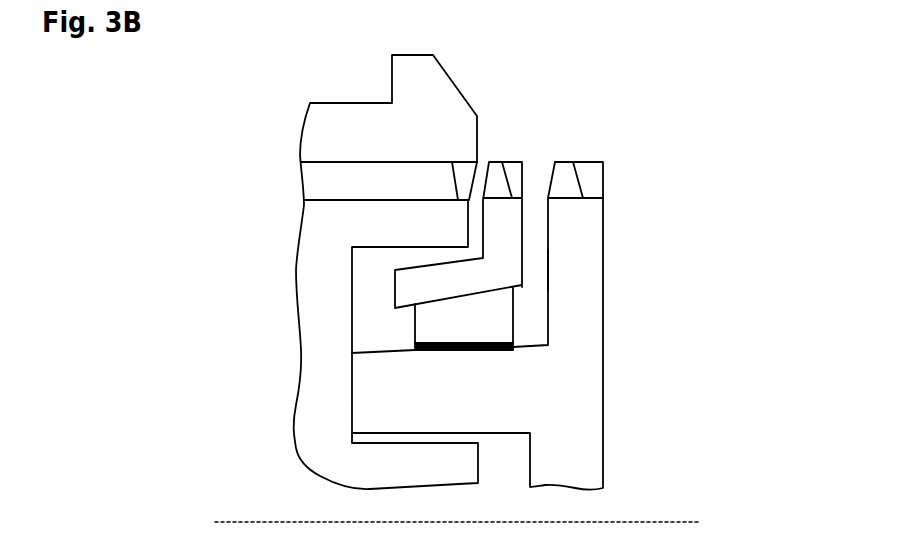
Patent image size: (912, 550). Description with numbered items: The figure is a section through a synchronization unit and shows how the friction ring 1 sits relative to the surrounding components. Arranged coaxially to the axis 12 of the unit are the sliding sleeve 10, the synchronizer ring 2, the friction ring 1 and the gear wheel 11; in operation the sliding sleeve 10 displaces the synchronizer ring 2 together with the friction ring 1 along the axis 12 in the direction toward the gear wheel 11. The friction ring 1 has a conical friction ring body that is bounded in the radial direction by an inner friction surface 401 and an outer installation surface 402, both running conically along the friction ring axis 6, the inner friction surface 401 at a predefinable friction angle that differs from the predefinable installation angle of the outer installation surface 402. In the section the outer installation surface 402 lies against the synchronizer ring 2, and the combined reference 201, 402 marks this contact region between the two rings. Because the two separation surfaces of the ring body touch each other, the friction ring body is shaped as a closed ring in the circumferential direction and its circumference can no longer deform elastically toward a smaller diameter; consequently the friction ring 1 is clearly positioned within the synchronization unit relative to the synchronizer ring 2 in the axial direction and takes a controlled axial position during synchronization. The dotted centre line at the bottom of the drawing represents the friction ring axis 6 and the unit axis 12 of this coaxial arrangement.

The friction ring 1 is at (574, 278).
The synchronizer ring 2 is at (505, 208).
The sliding sleeve 10 is at (333, 183).
The gear wheel 11 is at (587, 282).
The contact surface 201 is at (356, 325).
The outer installation surface 402 is at (578, 254).
The inner friction surface 401 is at (482, 352).
The friction ring axis 6 is at (496, 474).
The axis of the synchronization unit 12 is at (660, 520).